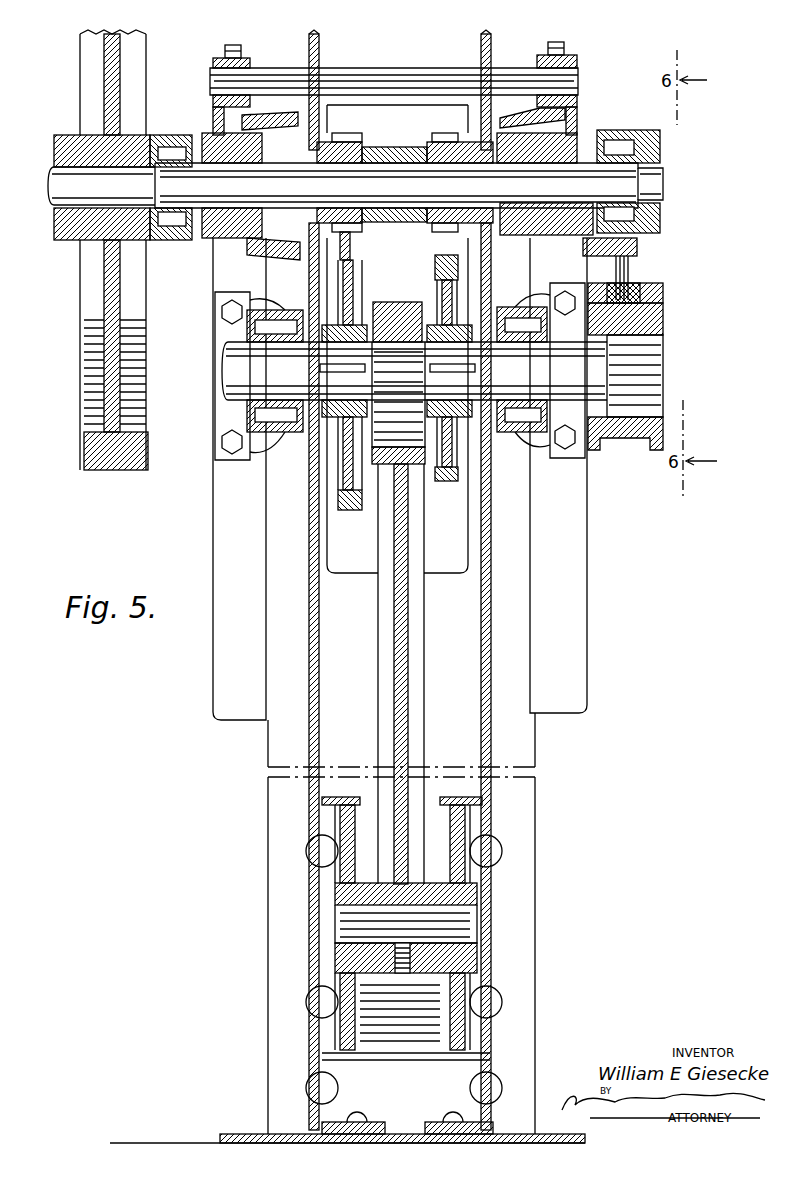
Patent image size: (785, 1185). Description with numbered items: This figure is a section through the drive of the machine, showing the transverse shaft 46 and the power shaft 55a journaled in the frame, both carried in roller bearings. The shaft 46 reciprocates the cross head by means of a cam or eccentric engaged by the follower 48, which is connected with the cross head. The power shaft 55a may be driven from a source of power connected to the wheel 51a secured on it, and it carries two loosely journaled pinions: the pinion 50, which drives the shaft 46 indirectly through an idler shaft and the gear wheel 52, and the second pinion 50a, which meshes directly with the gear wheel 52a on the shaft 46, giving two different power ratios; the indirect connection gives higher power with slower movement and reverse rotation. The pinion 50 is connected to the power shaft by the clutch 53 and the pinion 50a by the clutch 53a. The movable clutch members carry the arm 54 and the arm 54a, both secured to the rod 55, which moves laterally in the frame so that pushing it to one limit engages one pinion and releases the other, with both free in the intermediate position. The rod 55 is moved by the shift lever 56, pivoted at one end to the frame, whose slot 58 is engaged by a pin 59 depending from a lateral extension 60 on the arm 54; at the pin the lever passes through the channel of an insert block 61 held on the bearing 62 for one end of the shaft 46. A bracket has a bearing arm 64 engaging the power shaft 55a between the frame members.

The shaft 46 is at (522, 382).
The follower 48 is at (407, 683).
The pinion 50 is at (436, 133).
The second pinion 50a is at (340, 133).
The wheel 51a is at (129, 470).
The gear wheel 52 is at (457, 483).
The gear wheel 52a is at (352, 512).
The clutch 53 is at (548, 120).
The clutch 53a is at (253, 258).
The arm 54 is at (573, 62).
The arm 54a is at (218, 60).
The rod 55 is at (392, 72).
The power shaft 55a is at (76, 182).
The shift lever 56 is at (664, 302).
The slot 58 is at (637, 282).
The pin 59 is at (633, 270).
The lateral extension 60 is at (640, 247).
The insert block 61 is at (664, 312).
The bearing 62 is at (628, 428).
The bearing arm 64 is at (384, 147).